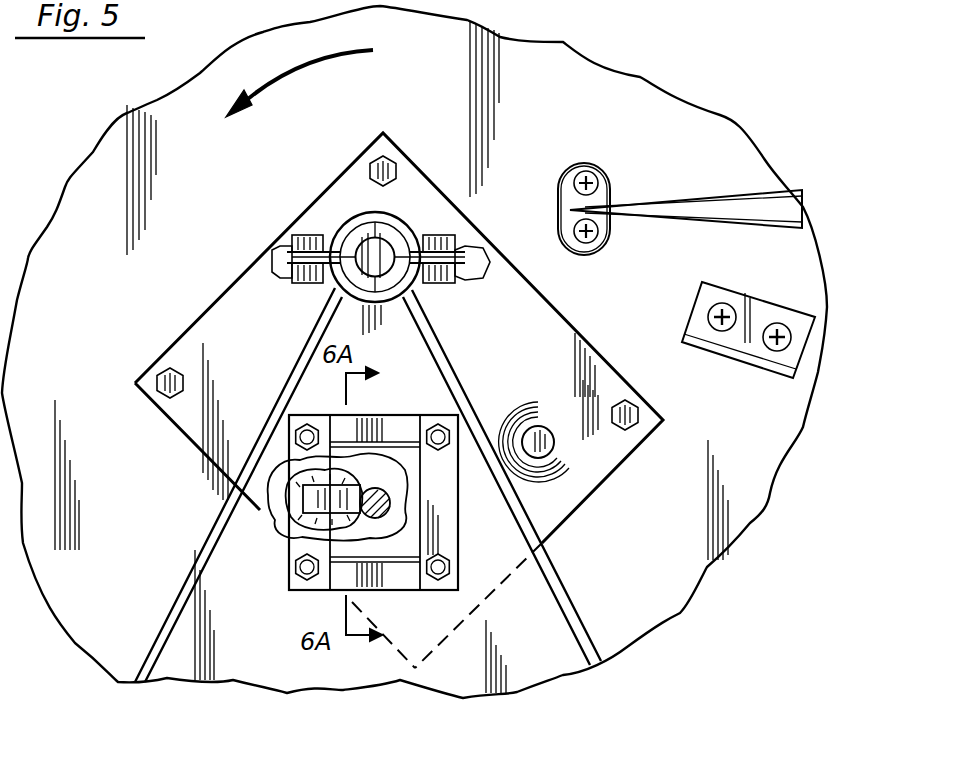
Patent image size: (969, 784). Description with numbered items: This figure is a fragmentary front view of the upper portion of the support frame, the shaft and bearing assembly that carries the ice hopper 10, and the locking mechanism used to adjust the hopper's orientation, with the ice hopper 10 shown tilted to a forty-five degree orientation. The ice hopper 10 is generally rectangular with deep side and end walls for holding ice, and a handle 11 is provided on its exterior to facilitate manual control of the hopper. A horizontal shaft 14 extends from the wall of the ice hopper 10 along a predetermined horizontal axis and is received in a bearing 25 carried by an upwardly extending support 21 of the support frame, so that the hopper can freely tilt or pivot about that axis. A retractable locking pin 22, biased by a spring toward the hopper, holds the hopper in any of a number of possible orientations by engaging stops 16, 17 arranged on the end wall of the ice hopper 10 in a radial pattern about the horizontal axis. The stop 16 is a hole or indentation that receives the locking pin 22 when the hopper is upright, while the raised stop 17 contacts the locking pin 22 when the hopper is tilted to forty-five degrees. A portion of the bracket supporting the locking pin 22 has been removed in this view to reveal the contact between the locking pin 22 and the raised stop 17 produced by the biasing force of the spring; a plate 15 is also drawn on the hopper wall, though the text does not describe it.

The ice hopper 10 is at (92, 346).
The handle 11 is at (675, 210).
The horizontal shaft 14 is at (362, 250).
The retaining plate 15 is at (736, 352).
The stop 16 is at (548, 450).
The raised stop 17 is at (305, 475).
The support 21 is at (263, 641).
The locking pin 22 is at (390, 503).
The bearing 25 is at (388, 238).